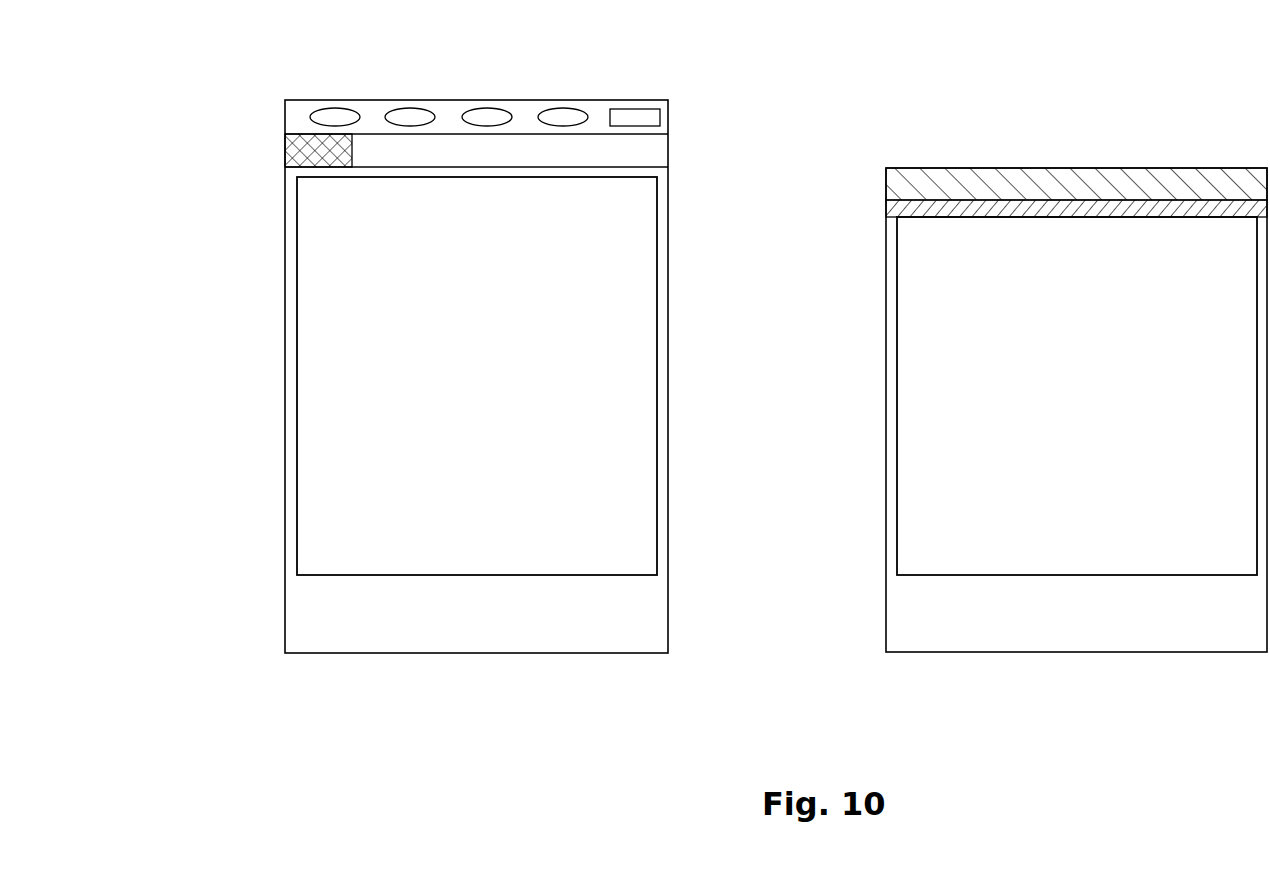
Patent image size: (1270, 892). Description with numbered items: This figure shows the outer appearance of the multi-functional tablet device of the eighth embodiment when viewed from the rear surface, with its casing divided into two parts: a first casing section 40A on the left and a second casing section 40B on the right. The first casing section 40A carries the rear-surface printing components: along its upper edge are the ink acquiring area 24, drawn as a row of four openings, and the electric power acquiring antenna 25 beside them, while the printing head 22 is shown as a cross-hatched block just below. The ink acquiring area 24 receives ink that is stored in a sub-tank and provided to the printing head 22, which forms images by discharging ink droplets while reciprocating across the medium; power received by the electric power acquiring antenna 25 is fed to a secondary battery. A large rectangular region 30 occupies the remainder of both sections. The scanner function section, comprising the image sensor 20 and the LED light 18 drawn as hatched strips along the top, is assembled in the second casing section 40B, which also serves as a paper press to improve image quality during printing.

The LED light 18 is at (878, 209).
The image sensor 20 is at (878, 183).
The printing head 22 is at (278, 144).
The ink acquiring area 24 is at (307, 95).
The electric power acquiring antenna 25 is at (637, 117).
The display area 30 is at (313, 376).
The first casing section 40A is at (475, 637).
The second casing section 40B is at (1077, 636).